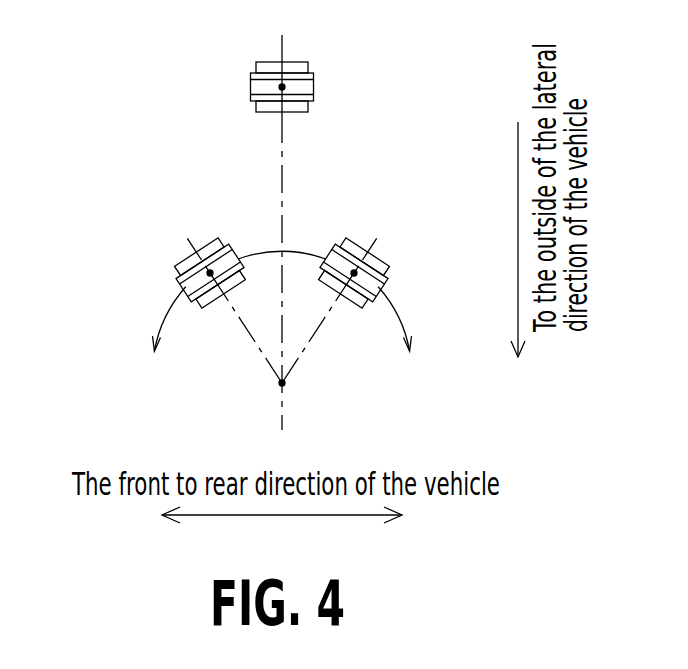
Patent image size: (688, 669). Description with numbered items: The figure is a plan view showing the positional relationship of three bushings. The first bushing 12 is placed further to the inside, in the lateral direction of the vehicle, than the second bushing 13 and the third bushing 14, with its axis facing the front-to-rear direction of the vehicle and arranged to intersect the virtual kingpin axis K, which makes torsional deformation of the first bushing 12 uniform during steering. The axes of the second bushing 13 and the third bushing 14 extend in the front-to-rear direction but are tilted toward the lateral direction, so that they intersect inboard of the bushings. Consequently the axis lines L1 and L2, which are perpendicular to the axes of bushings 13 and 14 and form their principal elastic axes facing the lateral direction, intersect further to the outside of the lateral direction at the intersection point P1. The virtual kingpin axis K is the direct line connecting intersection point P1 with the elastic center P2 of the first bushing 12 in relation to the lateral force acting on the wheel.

The first bushing 12 is at (297, 62).
The second bushing 13 is at (178, 262).
The third bushing 14 is at (384, 258).
The elastic center P2 is at (282, 87).
The intersection point P1 is at (284, 386).
The virtual kingpin axis K is at (282, 173).
The principal elastic axis L1 is at (250, 333).
The principal elastic axis L2 is at (315, 333).